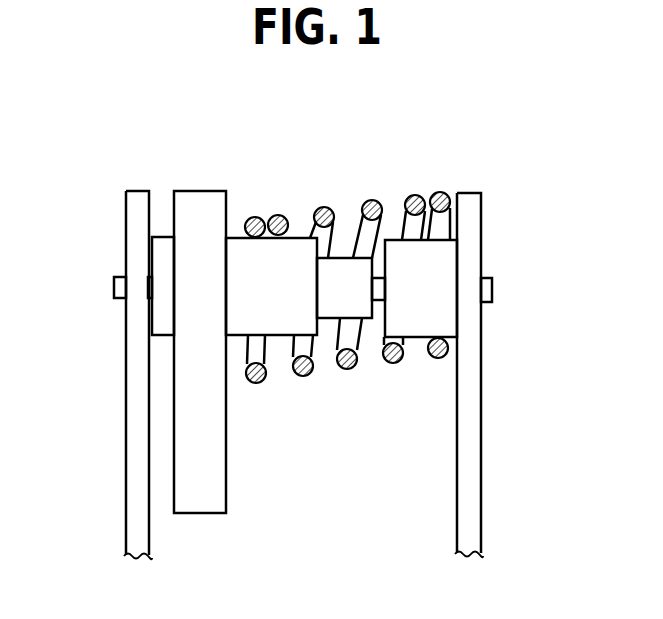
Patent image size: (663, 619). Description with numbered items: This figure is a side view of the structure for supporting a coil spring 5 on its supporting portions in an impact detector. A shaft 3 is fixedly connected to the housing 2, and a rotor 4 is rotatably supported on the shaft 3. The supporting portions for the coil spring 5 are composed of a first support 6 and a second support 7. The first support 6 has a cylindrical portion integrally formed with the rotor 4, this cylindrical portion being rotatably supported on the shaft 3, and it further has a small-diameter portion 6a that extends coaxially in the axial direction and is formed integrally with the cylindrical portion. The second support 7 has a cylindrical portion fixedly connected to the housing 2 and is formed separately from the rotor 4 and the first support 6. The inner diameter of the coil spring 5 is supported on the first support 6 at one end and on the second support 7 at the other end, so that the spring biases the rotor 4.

The housing 2 is at (132, 508).
The shaft 3 is at (493, 288).
The rotor 4 is at (200, 210).
The coil spring 5 is at (440, 193).
The first support 6 is at (295, 252).
The small-diameter portion 6a is at (340, 270).
The second support 7 is at (417, 340).